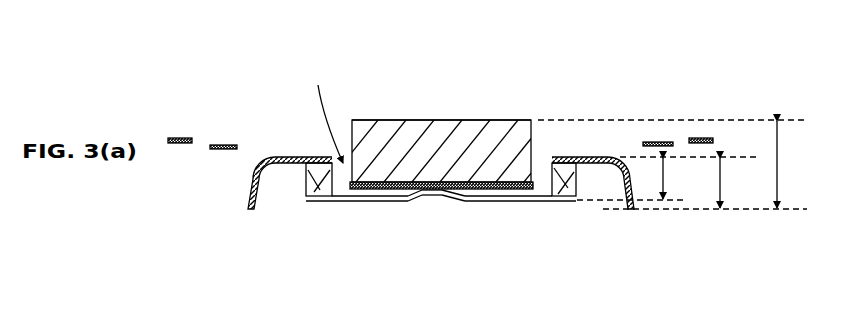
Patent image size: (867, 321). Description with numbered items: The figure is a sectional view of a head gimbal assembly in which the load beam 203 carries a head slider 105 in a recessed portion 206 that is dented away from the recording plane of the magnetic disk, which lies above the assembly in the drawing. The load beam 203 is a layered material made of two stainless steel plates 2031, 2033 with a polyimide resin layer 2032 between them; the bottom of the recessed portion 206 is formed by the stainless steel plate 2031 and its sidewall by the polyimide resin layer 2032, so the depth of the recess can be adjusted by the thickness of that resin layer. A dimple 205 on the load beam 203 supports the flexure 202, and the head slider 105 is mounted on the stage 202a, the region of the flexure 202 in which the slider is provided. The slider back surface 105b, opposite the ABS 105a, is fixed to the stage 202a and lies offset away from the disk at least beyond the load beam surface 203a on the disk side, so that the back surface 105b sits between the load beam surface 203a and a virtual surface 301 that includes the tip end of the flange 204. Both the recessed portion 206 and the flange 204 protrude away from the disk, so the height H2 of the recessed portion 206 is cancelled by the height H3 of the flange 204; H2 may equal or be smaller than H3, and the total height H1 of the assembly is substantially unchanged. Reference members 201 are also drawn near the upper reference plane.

The head slider 105 is at (445, 120).
The ABS 105a is at (375, 120).
The slider back surface 105b is at (373, 189).
The first reference member 201 is at (173, 135).
The flexure 202 is at (222, 150).
The stage 202a is at (410, 200).
The load beam 203 is at (328, 204).
The load beam surface 203a is at (553, 157).
The stainless steel plate 2031 is at (488, 202).
The polyimide resin layer 2032 is at (305, 188).
The stainless steel plate 2033 is at (278, 157).
The flange 204 is at (248, 210).
The dimple 205 is at (437, 191).
The recessed portion 206 is at (323, 109).
The virtual surface 301 is at (752, 210).
The total height of the HGA H1 is at (794, 164).
The height of the recessed portion H2 is at (680, 178).
The height of the flange H3 is at (736, 183).